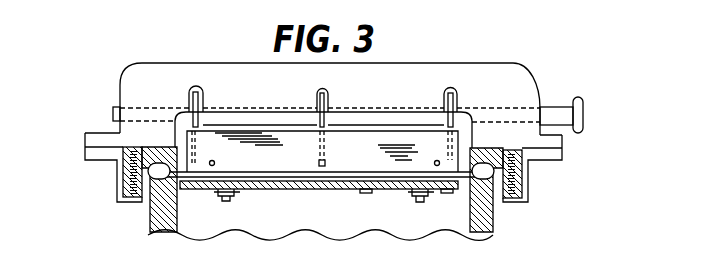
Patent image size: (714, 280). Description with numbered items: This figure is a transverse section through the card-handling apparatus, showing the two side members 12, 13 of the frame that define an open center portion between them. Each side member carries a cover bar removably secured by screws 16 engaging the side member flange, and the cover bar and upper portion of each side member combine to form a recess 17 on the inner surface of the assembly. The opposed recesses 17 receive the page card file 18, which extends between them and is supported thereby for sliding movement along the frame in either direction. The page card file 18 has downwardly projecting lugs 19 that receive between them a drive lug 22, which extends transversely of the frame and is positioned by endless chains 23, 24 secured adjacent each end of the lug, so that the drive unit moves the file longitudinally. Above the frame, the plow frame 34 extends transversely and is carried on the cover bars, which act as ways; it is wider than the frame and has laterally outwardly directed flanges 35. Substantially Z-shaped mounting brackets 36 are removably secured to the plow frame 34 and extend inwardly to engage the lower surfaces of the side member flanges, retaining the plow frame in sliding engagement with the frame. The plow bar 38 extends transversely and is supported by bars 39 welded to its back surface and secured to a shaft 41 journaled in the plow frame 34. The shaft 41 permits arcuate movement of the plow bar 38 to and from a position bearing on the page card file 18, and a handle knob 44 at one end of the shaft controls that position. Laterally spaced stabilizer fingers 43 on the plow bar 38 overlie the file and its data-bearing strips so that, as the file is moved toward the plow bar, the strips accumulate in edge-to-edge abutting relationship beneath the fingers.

The side member 12 is at (167, 226).
The side member 13 is at (484, 237).
The screw 16 is at (134, 182).
The recess 17 is at (165, 172).
The page card file 18 is at (290, 180).
The lug 19 is at (190, 186).
The lug 22 is at (366, 193).
The endless chain 23 is at (228, 197).
The endless chain 24 is at (416, 201).
The plow frame 34 is at (525, 82).
The flange 35 is at (95, 133).
The mounting bracket 36 is at (87, 160).
The plow bar 38 is at (378, 131).
The bar 39 is at (203, 100).
The shaft 41 is at (113, 110).
The stabilizer finger 43 is at (215, 163).
The handle knob 44 is at (584, 115).